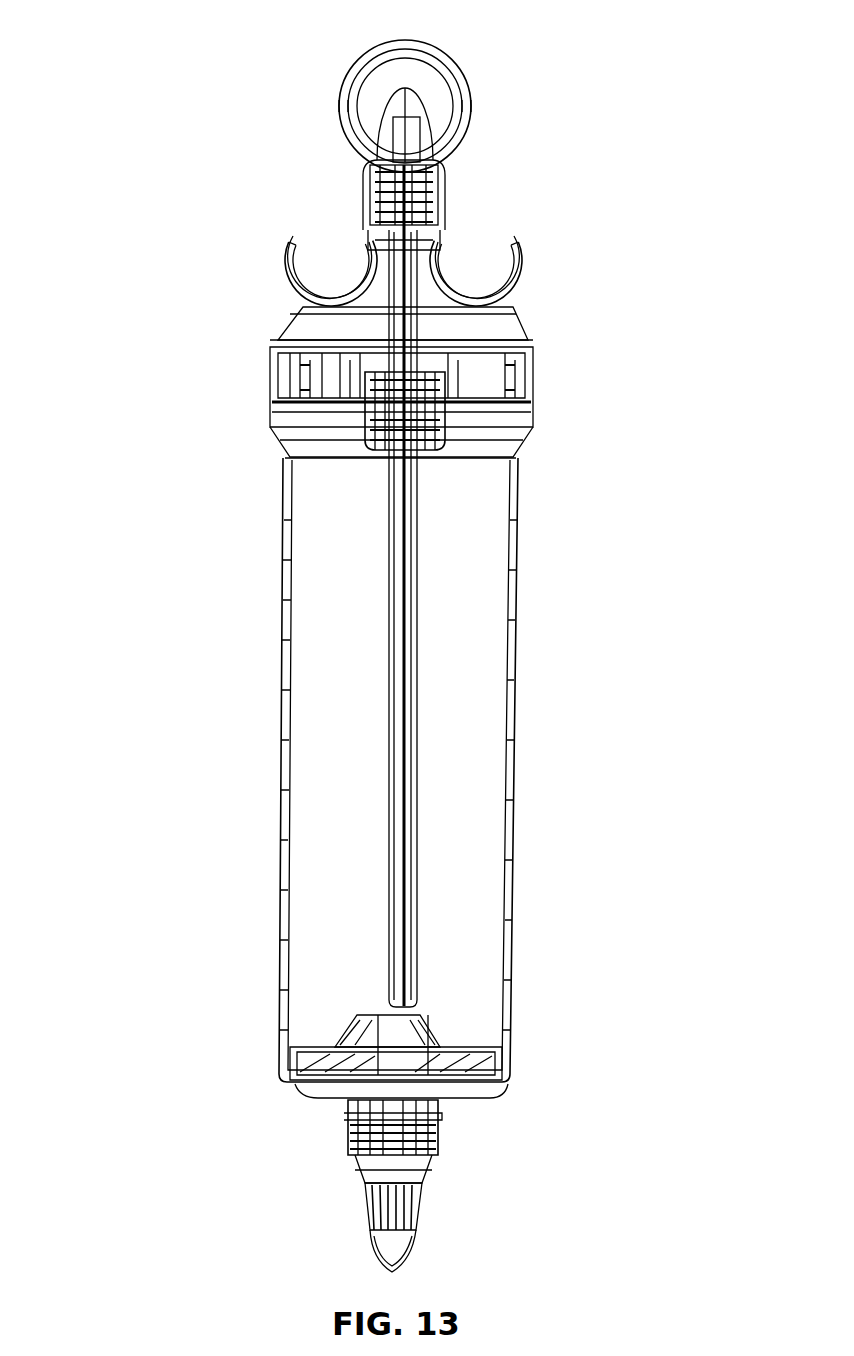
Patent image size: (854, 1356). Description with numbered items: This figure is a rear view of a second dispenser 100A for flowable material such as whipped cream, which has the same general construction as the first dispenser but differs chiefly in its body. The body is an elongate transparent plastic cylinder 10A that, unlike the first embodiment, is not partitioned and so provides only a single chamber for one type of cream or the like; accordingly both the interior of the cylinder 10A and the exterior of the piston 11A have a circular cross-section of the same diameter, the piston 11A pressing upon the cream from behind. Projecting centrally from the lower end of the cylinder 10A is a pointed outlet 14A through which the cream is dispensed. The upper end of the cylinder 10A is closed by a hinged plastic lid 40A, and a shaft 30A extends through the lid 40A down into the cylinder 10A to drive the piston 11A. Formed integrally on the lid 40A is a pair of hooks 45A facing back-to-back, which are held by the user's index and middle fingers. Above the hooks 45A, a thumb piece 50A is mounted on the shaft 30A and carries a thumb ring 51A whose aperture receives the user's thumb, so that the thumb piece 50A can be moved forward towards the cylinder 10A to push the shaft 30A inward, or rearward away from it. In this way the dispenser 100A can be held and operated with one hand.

The second dispenser 100A is at (205, 598).
The thumb ring 51A is at (442, 62).
The thumb piece 50A is at (478, 160).
The hooks 45A is at (287, 222).
The lid 40A is at (533, 358).
The shaft 30A is at (397, 690).
The cylinder 10A is at (497, 777).
The piston 11A is at (485, 1070).
The pointed outlet 14A is at (400, 1243).